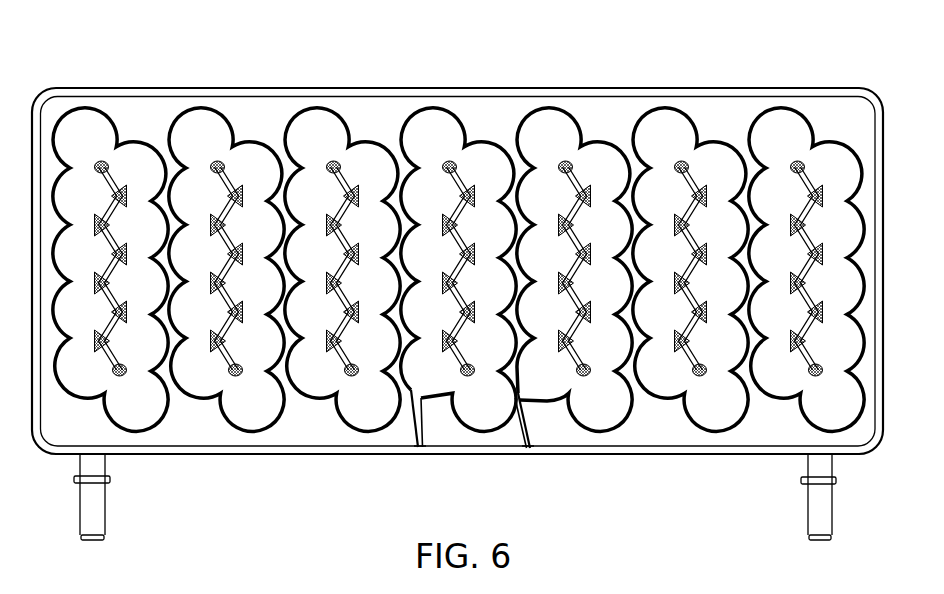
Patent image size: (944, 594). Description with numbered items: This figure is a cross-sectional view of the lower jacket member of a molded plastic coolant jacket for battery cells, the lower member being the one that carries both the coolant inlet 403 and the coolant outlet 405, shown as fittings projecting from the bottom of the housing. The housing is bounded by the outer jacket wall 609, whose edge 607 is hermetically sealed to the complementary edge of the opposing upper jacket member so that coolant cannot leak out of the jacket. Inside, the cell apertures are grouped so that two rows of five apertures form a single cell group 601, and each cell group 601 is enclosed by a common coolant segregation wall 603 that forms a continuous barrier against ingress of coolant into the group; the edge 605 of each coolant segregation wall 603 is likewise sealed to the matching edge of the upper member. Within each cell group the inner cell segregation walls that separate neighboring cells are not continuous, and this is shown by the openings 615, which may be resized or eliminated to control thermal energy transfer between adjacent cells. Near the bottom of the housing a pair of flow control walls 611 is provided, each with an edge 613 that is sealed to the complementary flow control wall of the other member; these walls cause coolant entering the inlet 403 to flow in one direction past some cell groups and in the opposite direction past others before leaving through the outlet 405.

The outer jacket wall 609 is at (92, 86).
The edge of outer jacket wall 607 is at (194, 94).
The coolant segregation wall 603 is at (458, 267).
The openings 615 is at (598, 240).
The edge of coolant segregation wall 605 is at (143, 436).
The cell group 601 is at (690, 267).
The edge of flow control wall 613 is at (416, 430).
The flow control wall 611 is at (515, 433).
The coolant inlet 403 is at (92, 510).
The coolant outlet 405 is at (820, 510).